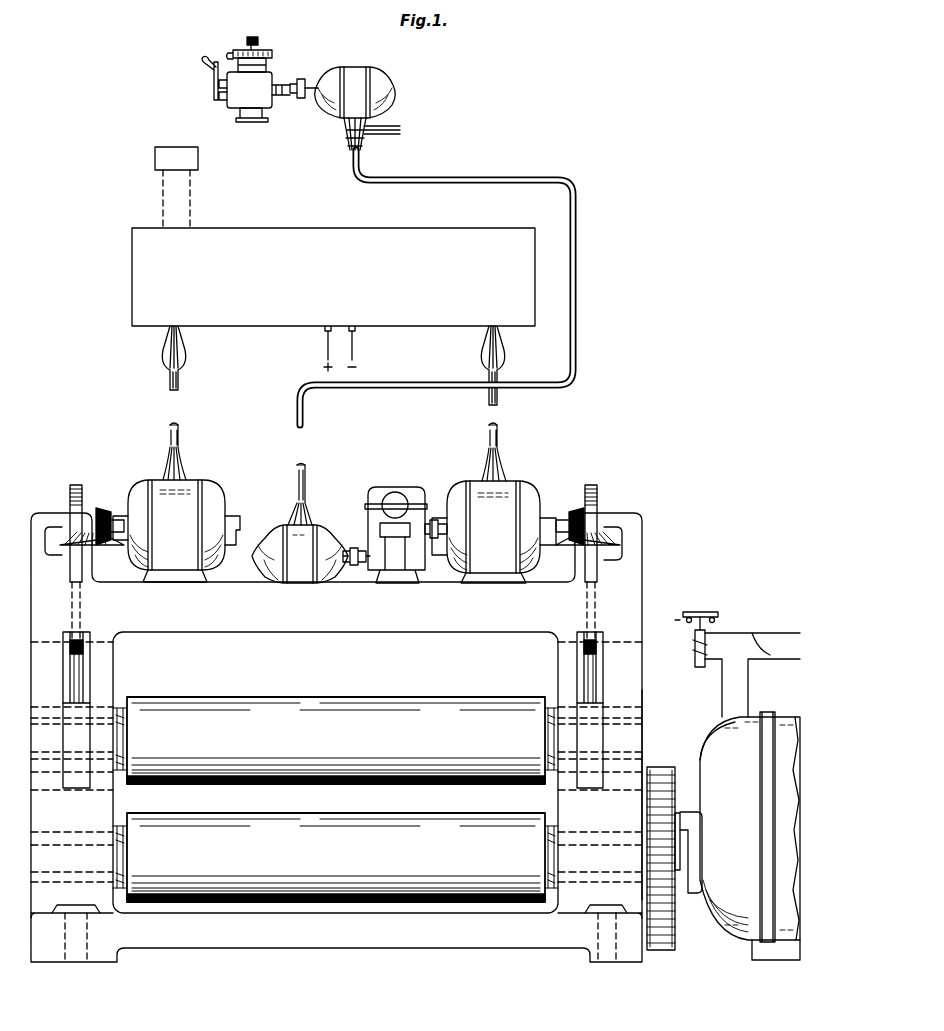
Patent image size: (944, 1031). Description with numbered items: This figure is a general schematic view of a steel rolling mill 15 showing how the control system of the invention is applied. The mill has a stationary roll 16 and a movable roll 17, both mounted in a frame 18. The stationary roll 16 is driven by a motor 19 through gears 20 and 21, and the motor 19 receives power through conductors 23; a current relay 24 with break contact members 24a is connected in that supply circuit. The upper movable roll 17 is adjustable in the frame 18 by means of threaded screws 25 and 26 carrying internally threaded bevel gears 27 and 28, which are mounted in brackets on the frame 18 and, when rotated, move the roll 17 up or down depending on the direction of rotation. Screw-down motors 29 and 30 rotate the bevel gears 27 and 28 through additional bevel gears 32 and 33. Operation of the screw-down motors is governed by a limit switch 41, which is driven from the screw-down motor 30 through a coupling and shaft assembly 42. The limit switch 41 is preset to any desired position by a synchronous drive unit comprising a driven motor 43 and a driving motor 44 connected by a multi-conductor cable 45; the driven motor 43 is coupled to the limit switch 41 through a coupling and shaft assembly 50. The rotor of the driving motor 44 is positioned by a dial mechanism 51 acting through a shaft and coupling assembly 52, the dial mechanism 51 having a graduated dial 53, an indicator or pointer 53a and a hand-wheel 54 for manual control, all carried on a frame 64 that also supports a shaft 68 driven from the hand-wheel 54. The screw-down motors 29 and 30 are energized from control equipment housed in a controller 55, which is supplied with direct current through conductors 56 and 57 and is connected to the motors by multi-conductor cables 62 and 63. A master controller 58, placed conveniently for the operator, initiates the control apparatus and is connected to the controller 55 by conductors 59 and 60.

The rolling mill 15 is at (354, 737).
The stationary roll 16 is at (437, 798).
The movable roll 17 is at (440, 697).
The frame 18 is at (644, 698).
The motor 19 is at (740, 937).
The gear 20 is at (680, 815).
The gear 21 is at (675, 775).
The conductors 23 is at (778, 652).
The current relay 24 is at (752, 664).
The break contact members 24a is at (718, 620).
The threaded screw 25 is at (83, 668).
The threaded screw 26 is at (584, 670).
The bevel gear 27 is at (96, 540).
The bevel gear 28 is at (575, 540).
The screw-down motor 29 is at (176, 502).
The screw-down motor 30 is at (494, 518).
The bevel gear 32 is at (104, 520).
The bevel gear 33 is at (568, 520).
The limit switch 41 is at (396, 520).
The coupling and shaft assembly 42 is at (434, 520).
The driven motor 43 is at (300, 524).
The driving motor 44 is at (355, 106).
The multi-conductor cable 45 is at (424, 390).
The coupling and shaft assembly 50 is at (356, 548).
The dial mechanism 51 is at (266, 76).
The shaft and coupling assembly 52 is at (300, 79).
The graduated dial 53 is at (258, 48).
The indicator or pointer 53a is at (228, 57).
The hand-wheel 54 is at (213, 80).
The controller 55 is at (333, 265).
The conductor 56 is at (328, 348).
The conductor 57 is at (352, 348).
The master controller 58 is at (193, 157).
The conductor 59 is at (163, 190).
The conductor 60 is at (190, 190).
The multi-conductor cable 62 is at (178, 382).
The multi-conductor cable 63 is at (497, 432).
The frame 64 is at (242, 104).
The shaft 68 is at (282, 97).